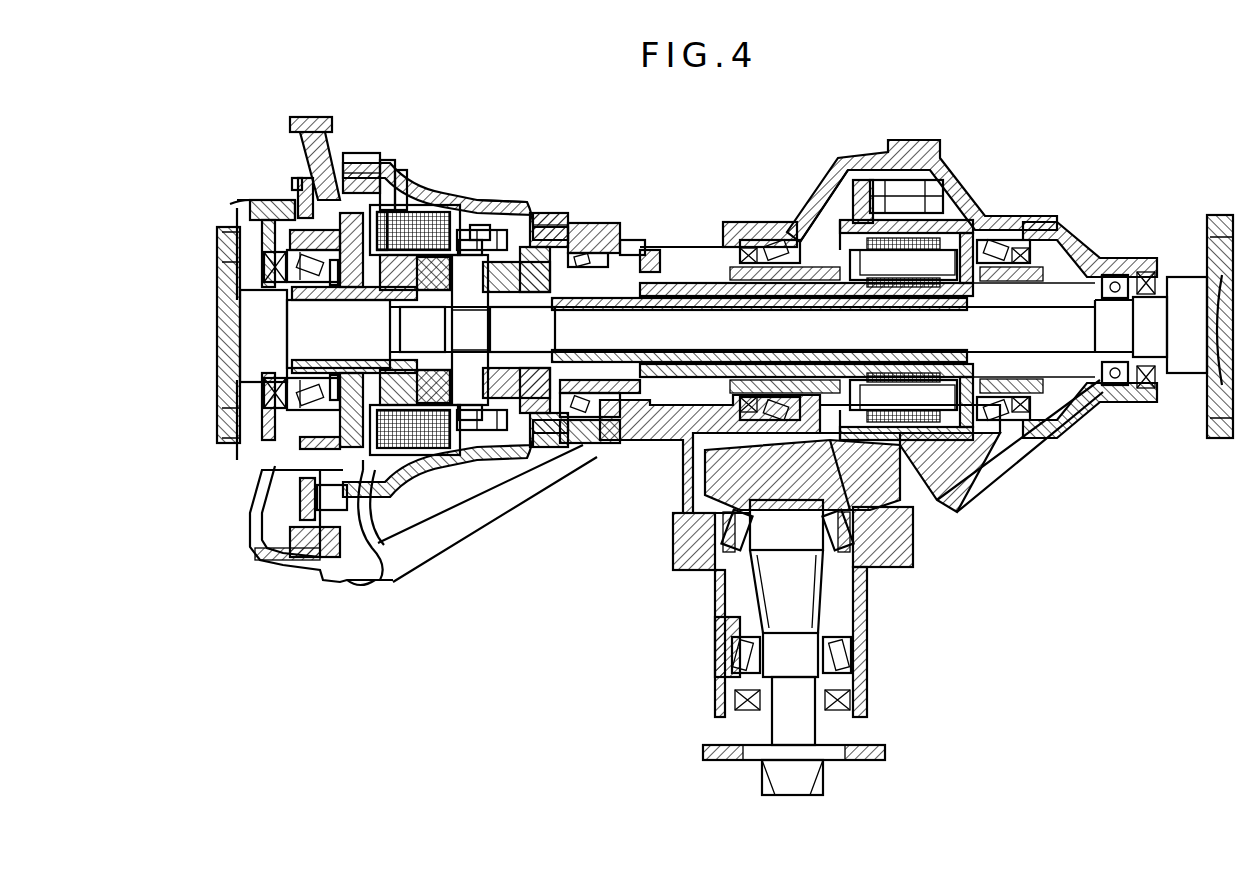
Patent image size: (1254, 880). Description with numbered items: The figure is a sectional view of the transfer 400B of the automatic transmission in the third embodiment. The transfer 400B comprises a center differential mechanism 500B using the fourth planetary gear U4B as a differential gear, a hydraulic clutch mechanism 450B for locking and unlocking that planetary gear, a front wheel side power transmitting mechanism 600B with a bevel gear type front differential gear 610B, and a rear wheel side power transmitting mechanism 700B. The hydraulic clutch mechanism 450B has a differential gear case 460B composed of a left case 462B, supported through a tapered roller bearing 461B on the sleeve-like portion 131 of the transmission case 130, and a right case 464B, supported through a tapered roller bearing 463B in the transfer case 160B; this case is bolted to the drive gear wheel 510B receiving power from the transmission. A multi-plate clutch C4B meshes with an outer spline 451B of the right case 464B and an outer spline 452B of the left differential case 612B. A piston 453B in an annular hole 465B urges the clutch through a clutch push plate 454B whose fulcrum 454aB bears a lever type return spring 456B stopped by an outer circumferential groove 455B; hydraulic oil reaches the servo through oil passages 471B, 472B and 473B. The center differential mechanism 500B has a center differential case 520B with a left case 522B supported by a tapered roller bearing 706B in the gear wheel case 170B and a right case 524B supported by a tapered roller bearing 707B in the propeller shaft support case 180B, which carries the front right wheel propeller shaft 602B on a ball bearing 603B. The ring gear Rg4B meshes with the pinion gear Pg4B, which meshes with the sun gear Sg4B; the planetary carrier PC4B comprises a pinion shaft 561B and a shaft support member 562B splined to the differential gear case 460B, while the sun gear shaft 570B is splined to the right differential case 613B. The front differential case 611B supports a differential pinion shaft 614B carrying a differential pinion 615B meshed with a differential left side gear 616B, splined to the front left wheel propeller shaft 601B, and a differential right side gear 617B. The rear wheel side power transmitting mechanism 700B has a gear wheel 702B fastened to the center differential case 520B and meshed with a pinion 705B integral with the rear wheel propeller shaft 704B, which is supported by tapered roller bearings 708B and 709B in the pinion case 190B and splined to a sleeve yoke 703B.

The transmission case 130 is at (330, 580).
The sleeve-like portion 131 is at (290, 432).
The transfer case 160B is at (533, 200).
The gear wheel case 170B is at (642, 252).
The propeller shaft support case 180B is at (1040, 230).
The pinion case 190B is at (865, 595).
The transfer 400B is at (243, 568).
The hydraulic clutch mechanism 450B is at (376, 302).
The outer spline 451B is at (380, 190).
The outer spline 452B is at (432, 205).
The piston 453B is at (300, 488).
The clutch push plate 454B is at (420, 210).
The fulcrum 454aB is at (400, 210).
The outer circumferential groove 455B is at (365, 175).
The lever type return spring 456B is at (345, 160).
The differential gear case 460B is at (382, 560).
The tapered roller bearing 461B is at (300, 395).
The left case 462B is at (330, 410).
The tapered roller bearing 463B is at (590, 237).
The right case 464B is at (477, 197).
The annular hole 465B is at (330, 445).
The oil passage 471B is at (290, 235).
The oil passage 472B is at (297, 222).
The oil passage 473B is at (298, 185).
The center differential mechanism 500B is at (947, 275).
The drive gear wheel 510B is at (300, 117).
The center differential case 520B is at (920, 450).
The left case 522B is at (778, 235).
The right case 524B is at (978, 228).
The pinion shaft 561B is at (935, 510).
The shaft support member 562B is at (688, 283).
The sun gear shaft 570B is at (660, 298).
The front wheel side power transmitting mechanism 600B is at (205, 315).
The front left wheel propeller shaft 601B is at (252, 312).
The front right wheel propeller shaft 602B is at (1052, 325).
The ball bearing 603B is at (1132, 298).
The front differential gear 610B is at (315, 557).
The front differential case 611B is at (492, 268).
The left differential case 612B is at (440, 470).
The right differential case 613B is at (520, 410).
The differential pinion shaft 614B is at (480, 450).
The differential pinion 615B is at (505, 430).
The differential left side gear 616B is at (408, 470).
The differential right side gear 617B is at (535, 380).
The rear wheel side power transmitting mechanism 700B is at (718, 763).
The gear wheel 702B is at (814, 168).
The sleeve yoke 703B is at (848, 750).
The rear wheel propeller shaft 704B is at (766, 590).
The pinion 705B is at (690, 470).
The tapered roller bearing 706B is at (745, 240).
The tapered roller bearing 707B is at (1012, 240).
The tapered roller bearing 708B is at (905, 545).
The tapered roller bearing 709B is at (848, 655).
The multi-plate clutch C4B is at (445, 250).
The ring gear Rg4B is at (905, 180).
The fourth planetary gear U4B is at (950, 180).
The planetary carrier PC4B is at (960, 405).
The pinion gear Pg4B is at (940, 400).
The sun gear Sg4B is at (990, 418).